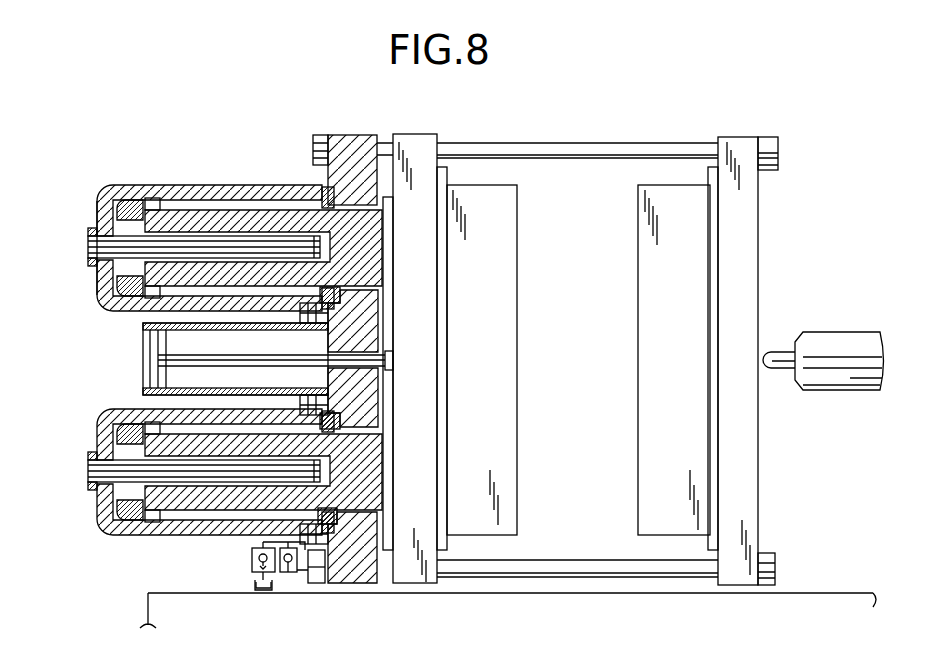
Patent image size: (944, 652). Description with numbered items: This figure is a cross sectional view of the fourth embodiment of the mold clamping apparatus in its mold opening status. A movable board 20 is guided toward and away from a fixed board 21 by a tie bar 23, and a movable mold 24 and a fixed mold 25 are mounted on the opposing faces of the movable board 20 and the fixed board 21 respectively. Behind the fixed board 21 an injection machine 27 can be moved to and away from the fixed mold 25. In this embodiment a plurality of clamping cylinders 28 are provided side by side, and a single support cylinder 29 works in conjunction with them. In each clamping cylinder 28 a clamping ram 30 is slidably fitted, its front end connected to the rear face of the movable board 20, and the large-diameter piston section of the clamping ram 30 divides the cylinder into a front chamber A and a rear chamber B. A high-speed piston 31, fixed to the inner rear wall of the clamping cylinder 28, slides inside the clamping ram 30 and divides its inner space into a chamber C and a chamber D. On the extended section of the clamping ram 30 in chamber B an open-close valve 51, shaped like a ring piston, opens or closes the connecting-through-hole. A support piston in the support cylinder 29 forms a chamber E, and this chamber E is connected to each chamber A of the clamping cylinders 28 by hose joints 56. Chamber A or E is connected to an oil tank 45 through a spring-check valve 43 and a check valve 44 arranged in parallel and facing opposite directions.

The movable board 20 is at (426, 142).
The fixed board 21 is at (745, 150).
The tie bar 23 is at (586, 142).
The movable mold 24 is at (504, 252).
The fixed mold 25 is at (642, 363).
The injection machine 27 is at (826, 340).
The clamping cylinder 28 is at (234, 188).
The support cylinder 29 is at (143, 377).
The clamping ram 30 is at (214, 210).
The high-speed piston 31 is at (197, 236).
The spring-check valve 43 is at (251, 559).
The check valve 44 is at (296, 573).
The oil tank 45 is at (258, 593).
The open-close valve 51 is at (109, 196).
The hose joint 56 is at (300, 316).
The front chamber A is at (301, 200).
The rear chamber B is at (122, 197).
The chamber C is at (340, 208).
The chamber D is at (110, 222).
The chamber E is at (166, 342).